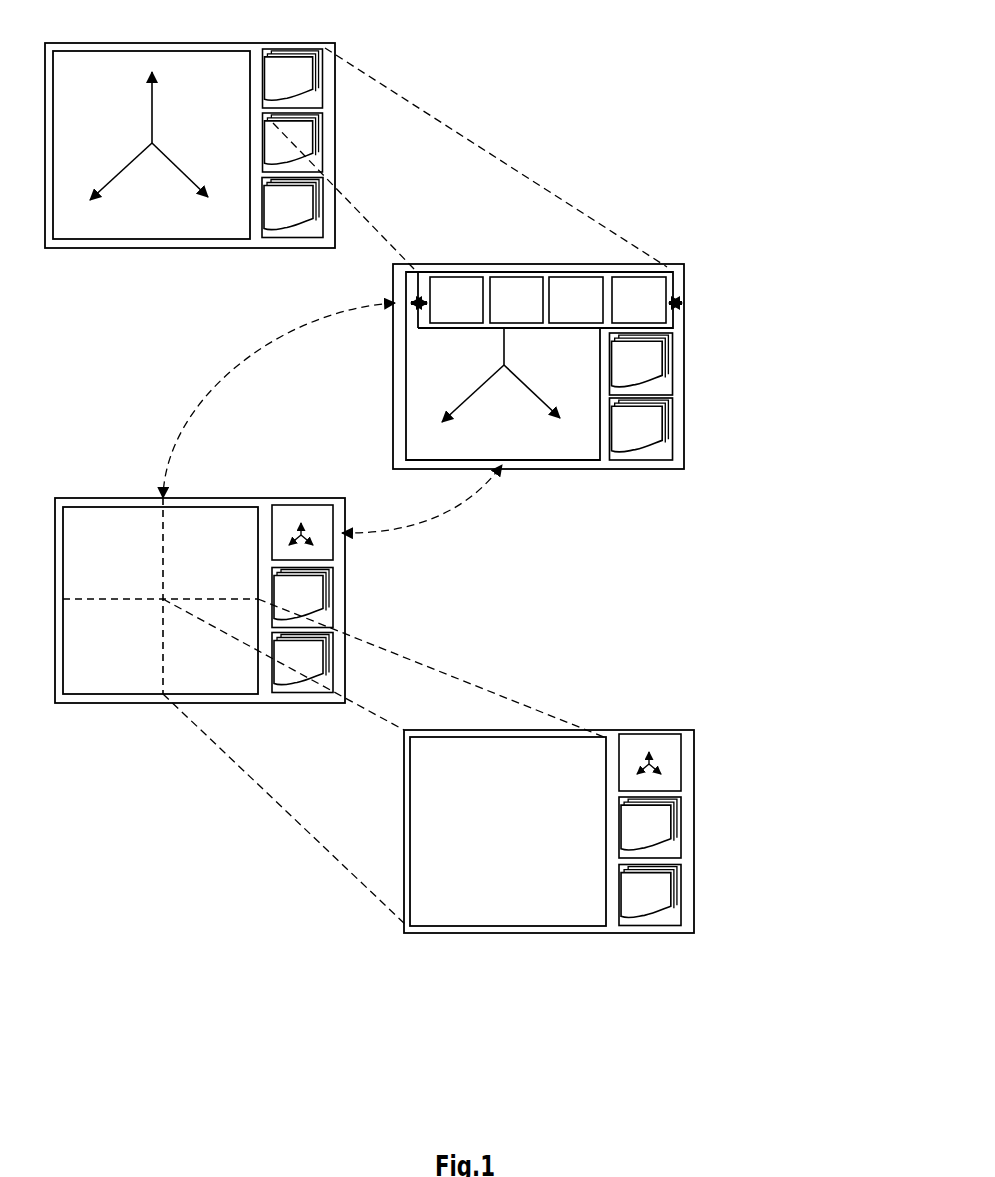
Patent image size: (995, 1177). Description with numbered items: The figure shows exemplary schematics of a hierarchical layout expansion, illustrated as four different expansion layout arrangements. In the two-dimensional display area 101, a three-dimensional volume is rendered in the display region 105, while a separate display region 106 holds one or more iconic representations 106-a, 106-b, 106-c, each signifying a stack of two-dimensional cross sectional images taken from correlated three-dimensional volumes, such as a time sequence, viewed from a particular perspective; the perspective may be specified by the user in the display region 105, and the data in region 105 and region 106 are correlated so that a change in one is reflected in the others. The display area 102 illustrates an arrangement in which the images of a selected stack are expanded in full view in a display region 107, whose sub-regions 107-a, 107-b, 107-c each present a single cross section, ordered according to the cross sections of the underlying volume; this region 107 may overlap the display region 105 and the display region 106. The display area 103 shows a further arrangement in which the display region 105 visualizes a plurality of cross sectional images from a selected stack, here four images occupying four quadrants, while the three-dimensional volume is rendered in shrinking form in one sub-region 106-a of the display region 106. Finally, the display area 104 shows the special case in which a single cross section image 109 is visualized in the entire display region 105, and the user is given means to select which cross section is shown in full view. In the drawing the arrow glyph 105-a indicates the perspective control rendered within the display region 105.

The 2D display area 101 is at (142, 42).
The display area 102 is at (685, 397).
The display area 103 is at (345, 590).
The display area 104 is at (694, 835).
The display region 105 is at (128, 213).
The navigation arrow control 105-a is at (127, 167).
The display region 106 is at (287, 243).
The iconic representation 106-a is at (300, 76).
The iconic representation 106-b is at (417, 60).
The iconic representation 106-c is at (417, 60).
The display region 107 is at (570, 277).
The sub-region 107-a is at (572, 302).
The sub-region 107-b is at (516, 300).
The sub-region 107-c is at (639, 300).
The enlarged display area 109 is at (513, 883).